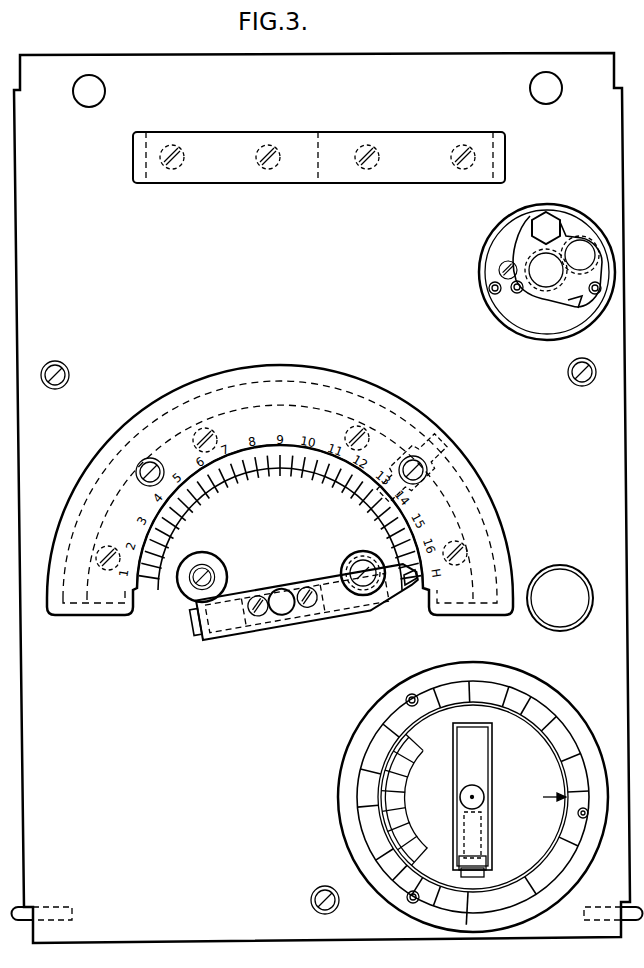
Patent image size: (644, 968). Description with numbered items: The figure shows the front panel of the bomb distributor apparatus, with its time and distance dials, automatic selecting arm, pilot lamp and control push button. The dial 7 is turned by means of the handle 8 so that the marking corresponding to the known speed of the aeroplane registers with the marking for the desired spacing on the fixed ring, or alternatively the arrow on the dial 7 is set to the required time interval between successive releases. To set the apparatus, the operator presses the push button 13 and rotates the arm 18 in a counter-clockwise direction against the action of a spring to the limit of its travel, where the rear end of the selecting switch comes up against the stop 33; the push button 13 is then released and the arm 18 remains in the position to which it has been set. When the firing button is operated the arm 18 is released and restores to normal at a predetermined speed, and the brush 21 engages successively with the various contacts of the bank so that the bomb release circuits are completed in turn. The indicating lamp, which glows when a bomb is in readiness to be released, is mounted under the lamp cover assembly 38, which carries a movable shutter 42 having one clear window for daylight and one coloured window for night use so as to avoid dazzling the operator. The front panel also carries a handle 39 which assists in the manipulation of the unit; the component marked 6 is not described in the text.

The computing dial 6 is at (451, 797).
The dial 7 is at (519, 740).
The handle 8 is at (478, 832).
The push button 13 is at (562, 578).
The arm 18 is at (299, 593).
The brush 21 is at (413, 586).
The stop 33 is at (344, 560).
The lamp cover assembly 38 is at (535, 293).
The handle 39 is at (236, 118).
The movable shutter 42 is at (570, 312).